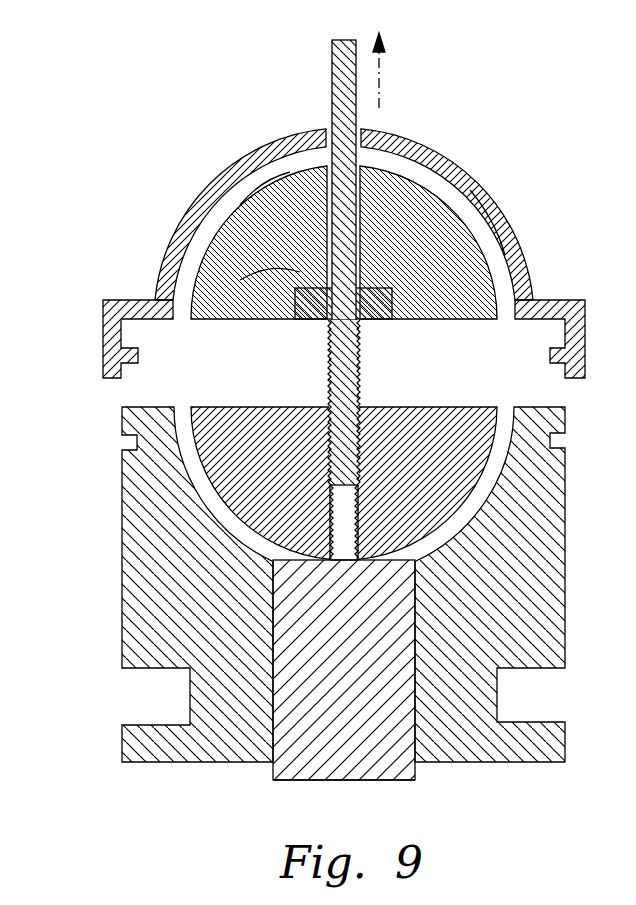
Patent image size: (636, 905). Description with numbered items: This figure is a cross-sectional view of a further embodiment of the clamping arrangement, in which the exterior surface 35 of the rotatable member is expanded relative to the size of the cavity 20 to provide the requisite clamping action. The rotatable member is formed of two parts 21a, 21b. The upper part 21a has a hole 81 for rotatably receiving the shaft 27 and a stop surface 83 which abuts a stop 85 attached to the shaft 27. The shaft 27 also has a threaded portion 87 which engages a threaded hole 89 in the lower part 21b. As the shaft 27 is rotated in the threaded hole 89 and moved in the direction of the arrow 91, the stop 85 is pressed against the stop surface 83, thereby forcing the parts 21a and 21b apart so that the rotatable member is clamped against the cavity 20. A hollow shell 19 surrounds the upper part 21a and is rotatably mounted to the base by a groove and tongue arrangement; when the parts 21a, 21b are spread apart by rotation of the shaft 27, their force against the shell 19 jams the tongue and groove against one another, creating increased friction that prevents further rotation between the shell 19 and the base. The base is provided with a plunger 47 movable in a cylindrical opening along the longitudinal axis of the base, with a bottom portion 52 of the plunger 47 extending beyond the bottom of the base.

The hollow shell 19 is at (475, 180).
The cavity 20 is at (493, 467).
The rotatable member part 21a is at (243, 233).
The rotatable member part 21b is at (250, 458).
The shaft 27 is at (332, 92).
The exterior surface 35 is at (492, 267).
The plunger 47 is at (323, 710).
The bottom portion 52 is at (336, 782).
The hole 81 is at (263, 210).
The stop surface 83 is at (300, 272).
The stop 85 is at (315, 322).
The threaded portion 87 is at (340, 456).
The threaded hole 89 is at (360, 523).
The arrow 91 is at (379, 73).